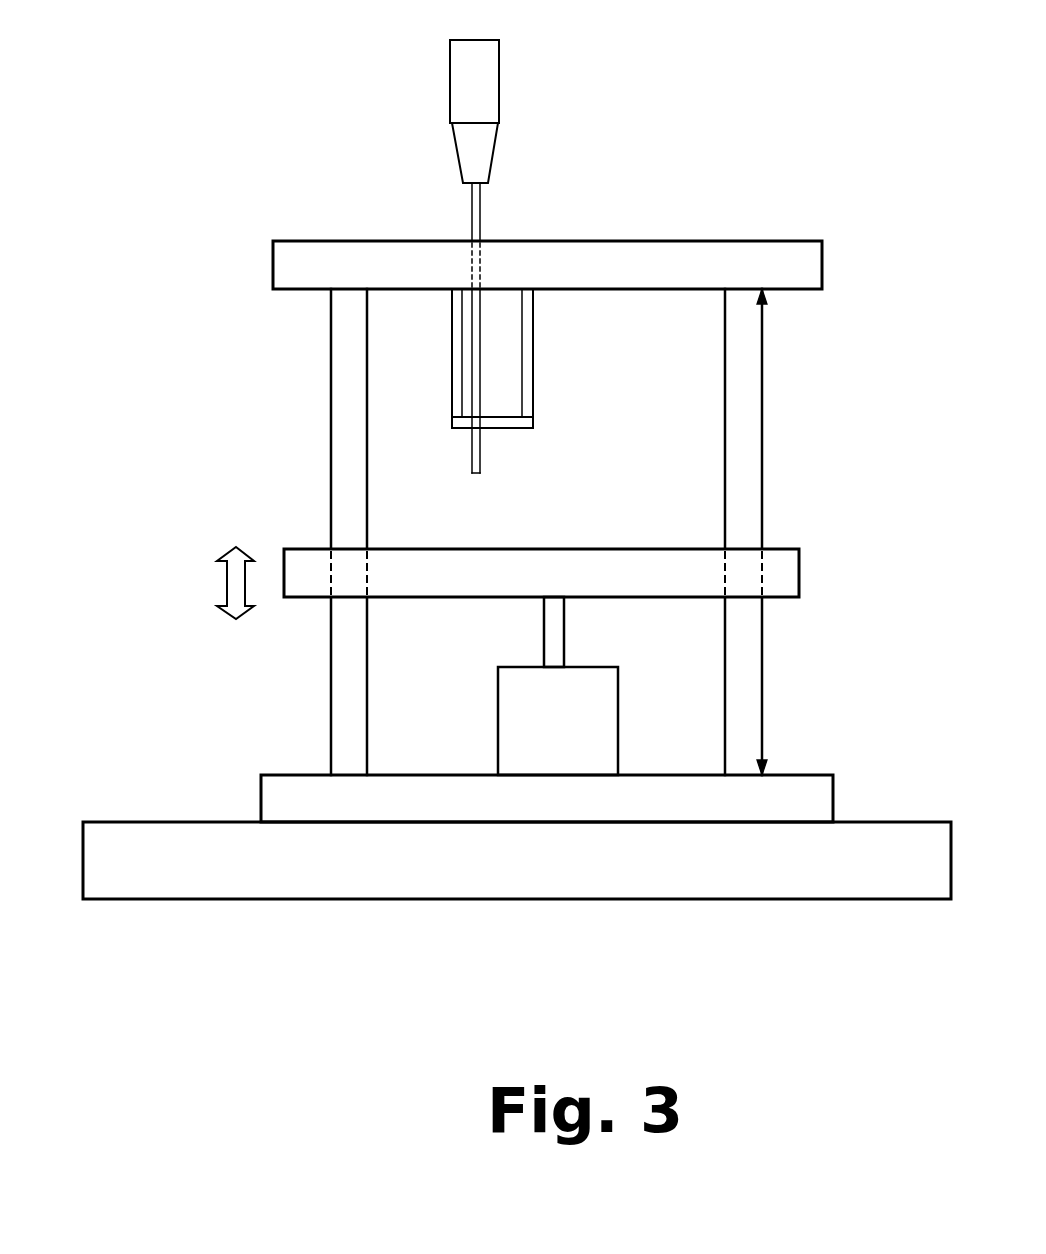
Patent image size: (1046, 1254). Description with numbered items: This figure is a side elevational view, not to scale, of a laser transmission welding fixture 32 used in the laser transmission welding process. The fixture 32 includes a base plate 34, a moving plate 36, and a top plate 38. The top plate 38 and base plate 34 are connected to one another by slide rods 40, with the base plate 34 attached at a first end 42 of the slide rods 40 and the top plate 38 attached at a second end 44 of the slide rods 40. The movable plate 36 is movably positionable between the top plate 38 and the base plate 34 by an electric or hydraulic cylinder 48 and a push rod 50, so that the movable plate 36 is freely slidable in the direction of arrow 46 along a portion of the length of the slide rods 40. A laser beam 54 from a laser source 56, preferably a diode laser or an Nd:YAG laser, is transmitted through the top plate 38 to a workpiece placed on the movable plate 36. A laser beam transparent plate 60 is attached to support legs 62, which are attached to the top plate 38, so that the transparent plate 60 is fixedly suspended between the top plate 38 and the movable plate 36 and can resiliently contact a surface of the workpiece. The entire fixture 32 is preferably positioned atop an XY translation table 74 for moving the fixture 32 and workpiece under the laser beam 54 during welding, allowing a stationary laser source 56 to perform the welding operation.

The laser transmission welding fixture 32 is at (190, 350).
The base plate 34 is at (780, 796).
The moving plate 36 is at (780, 561).
The top plate 38 is at (800, 263).
The slide rods 40 is at (742, 450).
The first end 42 is at (766, 770).
The second end 44 is at (766, 296).
The arrow 46 is at (228, 583).
The electric or hydraulic cylinder 48 is at (570, 743).
The push rod 50 is at (556, 622).
The laser beam 54 is at (481, 229).
The laser source 56 is at (480, 94).
The laser beam transparent plate 60 is at (495, 425).
The support legs 62 is at (530, 345).
The XY translation table 74 is at (531, 873).